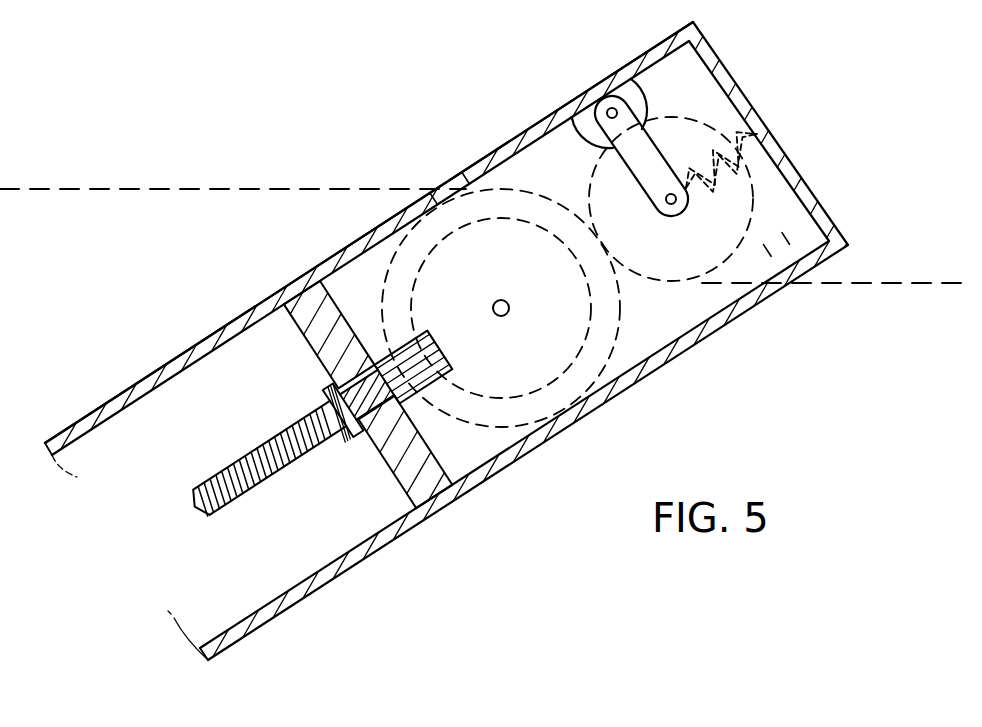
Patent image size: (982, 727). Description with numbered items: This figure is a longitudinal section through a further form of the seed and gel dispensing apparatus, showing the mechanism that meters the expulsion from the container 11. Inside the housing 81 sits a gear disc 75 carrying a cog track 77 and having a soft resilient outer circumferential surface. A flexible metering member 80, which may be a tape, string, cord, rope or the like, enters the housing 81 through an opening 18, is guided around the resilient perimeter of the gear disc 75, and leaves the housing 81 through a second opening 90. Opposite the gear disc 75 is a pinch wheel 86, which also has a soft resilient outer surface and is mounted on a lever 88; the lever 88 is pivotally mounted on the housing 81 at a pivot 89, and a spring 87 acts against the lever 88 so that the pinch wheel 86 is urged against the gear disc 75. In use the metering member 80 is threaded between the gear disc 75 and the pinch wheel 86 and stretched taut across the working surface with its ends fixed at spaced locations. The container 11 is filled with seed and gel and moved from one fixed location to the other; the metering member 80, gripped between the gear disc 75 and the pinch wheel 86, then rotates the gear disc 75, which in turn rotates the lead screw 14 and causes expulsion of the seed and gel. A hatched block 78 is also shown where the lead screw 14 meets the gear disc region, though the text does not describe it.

The container 11 is at (116, 396).
The lead screw 14 is at (214, 513).
The opening 18 is at (437, 184).
The gear disc 75 is at (501, 308).
The cog track 77 is at (549, 416).
The block 78 is at (435, 398).
The metering member 80 is at (216, 188).
The housing 81 is at (516, 135).
The pinch wheel 86 is at (736, 238).
The spring 87 is at (757, 152).
The lever 88 is at (661, 127).
The pivot 89 is at (591, 105).
The opening 90 is at (777, 291).